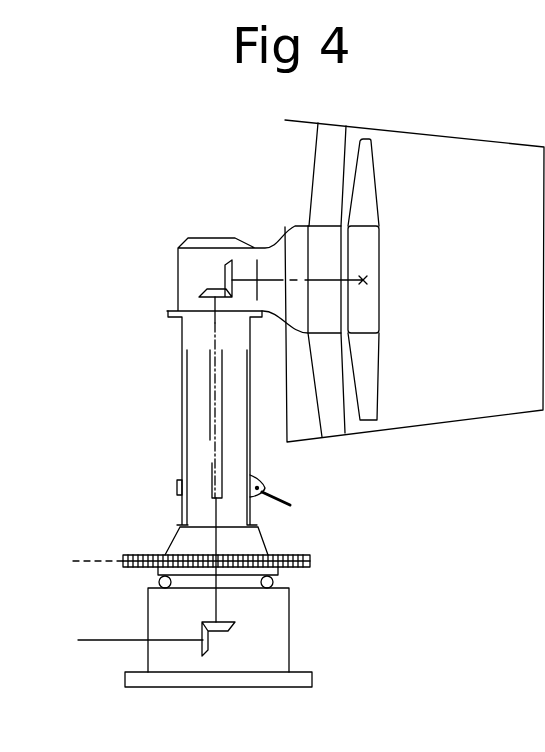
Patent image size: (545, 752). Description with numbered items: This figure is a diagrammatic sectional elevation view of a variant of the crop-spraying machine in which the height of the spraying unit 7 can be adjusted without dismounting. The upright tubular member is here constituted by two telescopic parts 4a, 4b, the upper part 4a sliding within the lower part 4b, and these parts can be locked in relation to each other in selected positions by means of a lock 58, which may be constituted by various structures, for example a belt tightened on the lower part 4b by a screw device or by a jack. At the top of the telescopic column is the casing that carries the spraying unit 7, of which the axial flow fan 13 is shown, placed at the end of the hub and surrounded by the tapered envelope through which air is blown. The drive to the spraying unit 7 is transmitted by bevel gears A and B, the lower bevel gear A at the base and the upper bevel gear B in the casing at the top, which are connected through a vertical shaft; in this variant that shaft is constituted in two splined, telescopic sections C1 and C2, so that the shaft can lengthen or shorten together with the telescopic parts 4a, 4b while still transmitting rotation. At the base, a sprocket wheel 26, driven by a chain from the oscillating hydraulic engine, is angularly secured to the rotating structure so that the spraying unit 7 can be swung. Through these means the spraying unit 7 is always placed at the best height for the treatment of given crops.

The telescopic part 4a is at (180, 400).
The telescopic part 4b is at (188, 512).
The spraying unit 7 is at (430, 425).
The axial flow fan 13 is at (368, 380).
The sprocket wheel 26 is at (293, 550).
The lock 58 is at (267, 484).
The bevel gear A is at (218, 640).
The bevel gear B is at (213, 282).
The splined telescopic shaft section C1 is at (213, 330).
The splined telescopic shaft section C2 is at (210, 472).